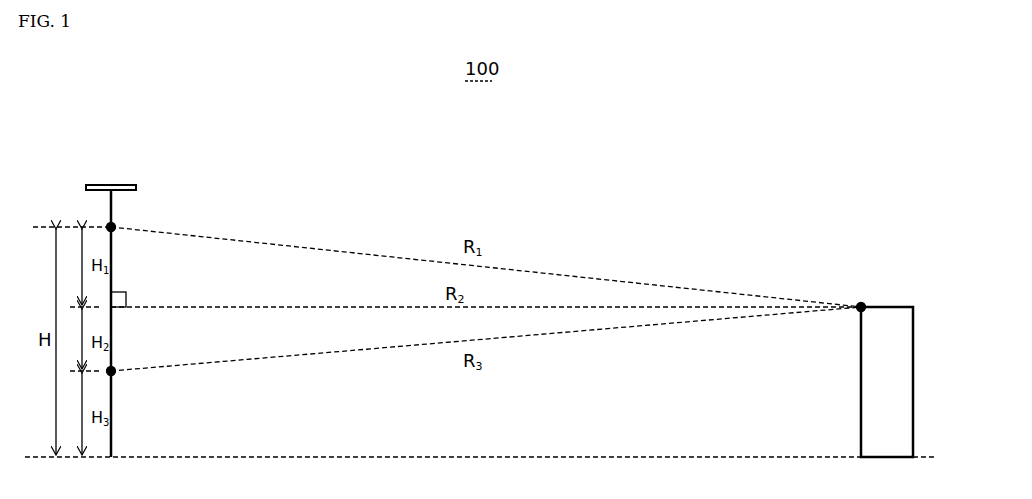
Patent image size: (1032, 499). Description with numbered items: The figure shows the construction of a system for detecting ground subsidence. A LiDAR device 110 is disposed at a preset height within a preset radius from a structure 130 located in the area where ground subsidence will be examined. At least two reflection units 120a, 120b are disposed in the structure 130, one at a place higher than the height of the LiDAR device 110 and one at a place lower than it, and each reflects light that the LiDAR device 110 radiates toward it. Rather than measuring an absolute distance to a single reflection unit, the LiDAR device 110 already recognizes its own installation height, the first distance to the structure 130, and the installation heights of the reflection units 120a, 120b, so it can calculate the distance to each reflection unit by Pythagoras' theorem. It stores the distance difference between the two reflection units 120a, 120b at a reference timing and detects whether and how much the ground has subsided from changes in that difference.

The LiDAR device 110 is at (858, 304).
The reflection unit 120a is at (115, 224).
The reflection unit 120b is at (115, 374).
The structure 130 is at (104, 185).